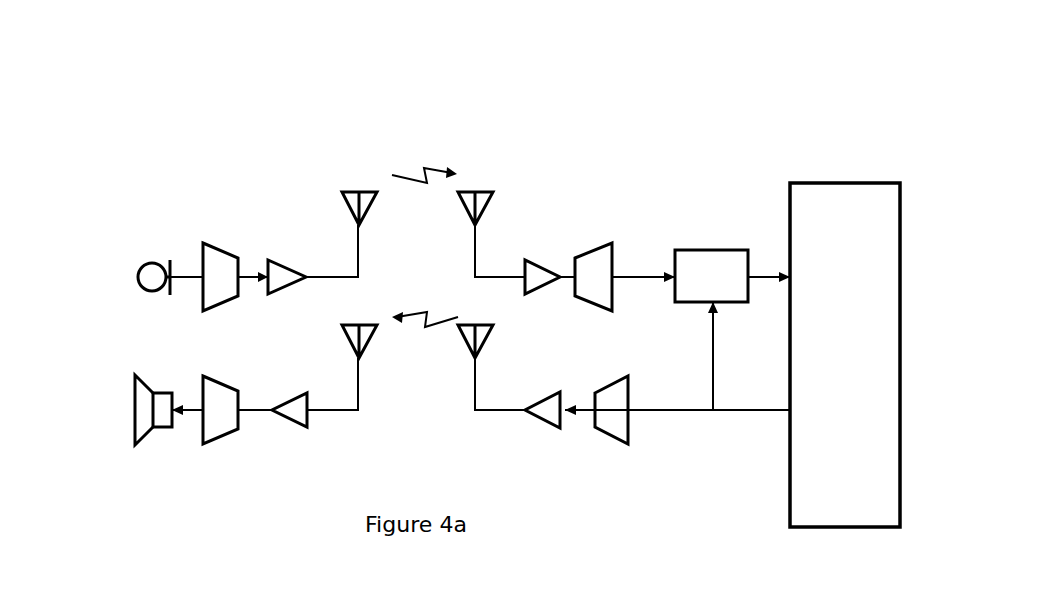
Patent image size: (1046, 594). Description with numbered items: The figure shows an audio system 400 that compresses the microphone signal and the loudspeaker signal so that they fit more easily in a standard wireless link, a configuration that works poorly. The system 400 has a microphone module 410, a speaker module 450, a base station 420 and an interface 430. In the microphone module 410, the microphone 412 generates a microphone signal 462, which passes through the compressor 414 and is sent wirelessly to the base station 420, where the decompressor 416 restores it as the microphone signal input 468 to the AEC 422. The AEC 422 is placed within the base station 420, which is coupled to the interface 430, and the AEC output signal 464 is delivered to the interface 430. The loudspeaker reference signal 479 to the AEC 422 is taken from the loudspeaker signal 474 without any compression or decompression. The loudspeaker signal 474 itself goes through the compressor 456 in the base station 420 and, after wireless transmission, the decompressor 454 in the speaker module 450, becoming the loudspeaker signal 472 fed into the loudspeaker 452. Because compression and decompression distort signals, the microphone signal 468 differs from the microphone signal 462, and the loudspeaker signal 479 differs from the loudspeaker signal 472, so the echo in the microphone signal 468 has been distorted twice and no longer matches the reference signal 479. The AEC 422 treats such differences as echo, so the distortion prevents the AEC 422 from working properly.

The audio system 400 is at (156, 125).
The microphone module 410 is at (126, 189).
The base station 420 is at (603, 112).
The interface 430 is at (798, 182).
The microphone 412 is at (137, 267).
The microphone signal 462 is at (196, 273).
The compressor 414 is at (220, 255).
The decompressor 416 is at (590, 255).
The microphone signal input 468 is at (617, 270).
The AEC 422 is at (687, 248).
The AEC output signal 464 is at (766, 281).
The loudspeaker reference signal 479 is at (713, 365).
The loudspeaker signal 474 is at (748, 412).
The compressor 456 is at (613, 380).
The decompressor 454 is at (225, 388).
The loudspeaker signal 472 is at (193, 405).
The loudspeaker 452 is at (135, 400).
The speaker module 450 is at (126, 314).